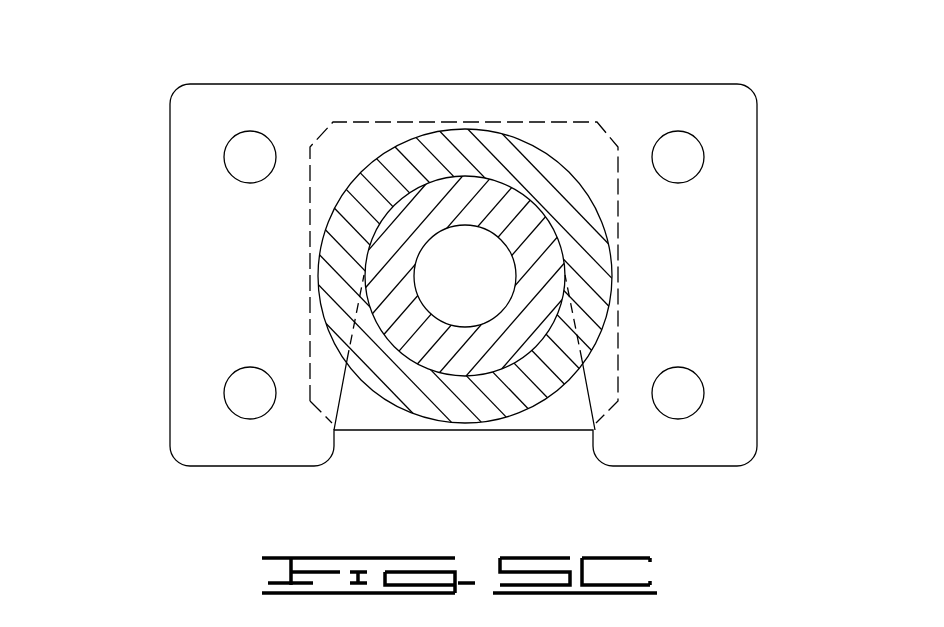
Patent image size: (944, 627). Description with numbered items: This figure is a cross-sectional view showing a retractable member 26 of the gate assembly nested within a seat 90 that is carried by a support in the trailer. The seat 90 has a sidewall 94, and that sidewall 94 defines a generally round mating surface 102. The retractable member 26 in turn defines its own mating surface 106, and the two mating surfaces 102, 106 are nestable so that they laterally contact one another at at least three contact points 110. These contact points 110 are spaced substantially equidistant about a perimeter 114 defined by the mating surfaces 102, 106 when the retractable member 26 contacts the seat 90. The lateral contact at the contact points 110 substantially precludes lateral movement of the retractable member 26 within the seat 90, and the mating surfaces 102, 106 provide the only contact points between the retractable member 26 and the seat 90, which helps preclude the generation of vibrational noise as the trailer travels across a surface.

The retractable member 26 is at (497, 213).
The seat 90 is at (170, 215).
The sidewall 94 is at (617, 276).
The mating surface 102 is at (558, 230).
The mating surface 106 is at (457, 377).
The contact points 110 is at (463, 172).
The perimeter 114 is at (417, 358).